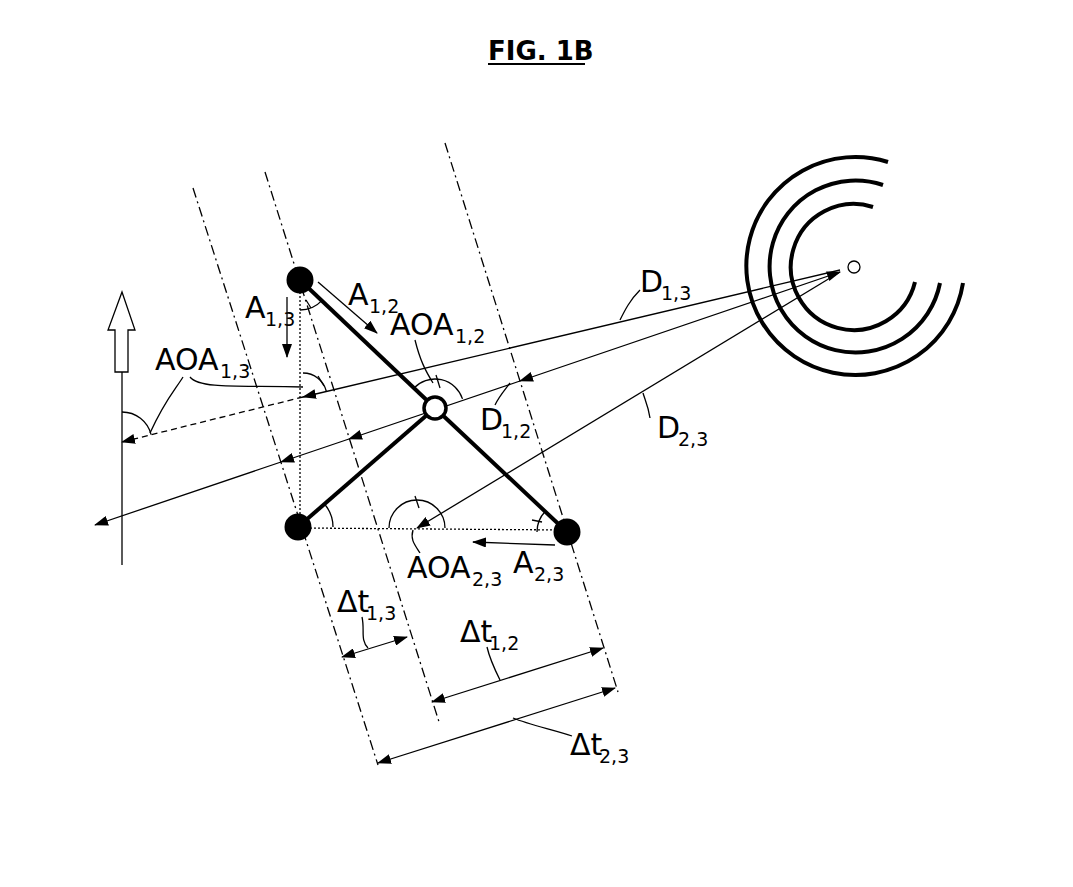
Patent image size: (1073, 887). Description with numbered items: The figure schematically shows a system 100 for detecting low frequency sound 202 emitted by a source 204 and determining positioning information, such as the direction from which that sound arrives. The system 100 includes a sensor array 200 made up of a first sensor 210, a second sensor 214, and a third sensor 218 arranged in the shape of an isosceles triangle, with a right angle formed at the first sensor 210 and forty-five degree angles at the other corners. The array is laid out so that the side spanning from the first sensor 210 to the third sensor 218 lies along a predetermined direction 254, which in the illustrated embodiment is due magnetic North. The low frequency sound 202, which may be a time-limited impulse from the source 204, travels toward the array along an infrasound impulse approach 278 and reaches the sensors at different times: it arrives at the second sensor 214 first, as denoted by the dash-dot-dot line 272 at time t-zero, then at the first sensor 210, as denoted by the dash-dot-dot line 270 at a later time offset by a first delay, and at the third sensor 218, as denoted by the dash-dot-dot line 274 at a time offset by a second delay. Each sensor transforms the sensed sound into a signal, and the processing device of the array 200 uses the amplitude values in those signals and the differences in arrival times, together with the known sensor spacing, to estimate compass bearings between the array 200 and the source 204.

The system 100 is at (782, 672).
The sensor array 200 is at (375, 173).
The low frequency sound 202 is at (748, 228).
The source 204 is at (860, 267).
The first sensor 210 is at (303, 268).
The second sensor 214 is at (580, 532).
The third sensor 218 is at (296, 539).
The predetermined direction 254 is at (123, 357).
The dash-dot-dot line 270 is at (272, 190).
The dash-dot-dot line 272 is at (450, 160).
The dash-dot-dot line 274 is at (196, 196).
The infrasound impulse approach 278 is at (580, 360).